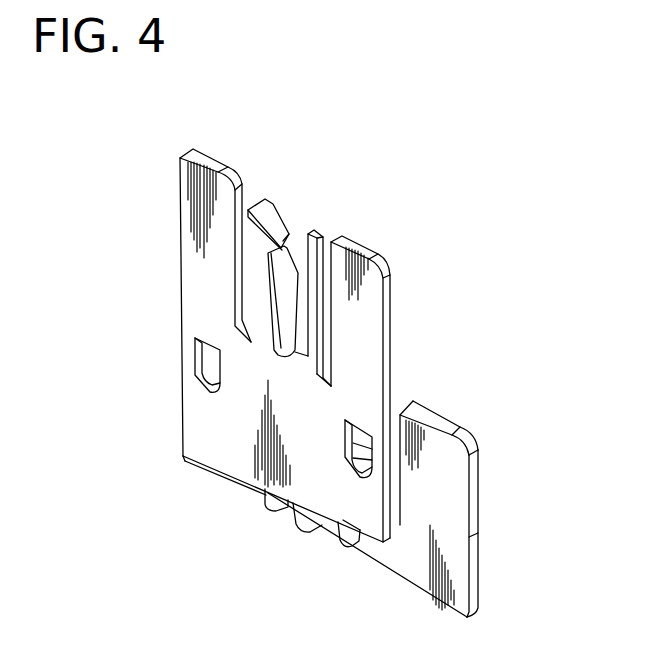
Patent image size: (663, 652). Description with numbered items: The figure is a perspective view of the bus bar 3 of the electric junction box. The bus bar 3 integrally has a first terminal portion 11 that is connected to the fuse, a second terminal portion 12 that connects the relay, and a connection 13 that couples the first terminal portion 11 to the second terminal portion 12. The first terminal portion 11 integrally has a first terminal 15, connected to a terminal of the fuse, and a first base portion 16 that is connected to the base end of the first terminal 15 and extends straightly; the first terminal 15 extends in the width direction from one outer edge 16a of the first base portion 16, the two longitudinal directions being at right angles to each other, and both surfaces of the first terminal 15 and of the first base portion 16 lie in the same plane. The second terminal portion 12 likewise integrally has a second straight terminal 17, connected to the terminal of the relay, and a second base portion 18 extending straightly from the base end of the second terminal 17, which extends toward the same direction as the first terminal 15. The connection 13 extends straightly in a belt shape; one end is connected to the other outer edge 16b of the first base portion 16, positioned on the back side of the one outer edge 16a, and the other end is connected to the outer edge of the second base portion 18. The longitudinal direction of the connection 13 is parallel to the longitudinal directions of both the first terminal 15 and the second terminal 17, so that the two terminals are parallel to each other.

The bus bar 3 is at (257, 136).
The first terminal portion 11 is at (396, 346).
The second terminal portion 12 is at (481, 515).
The connection 13 is at (280, 500).
The first terminal 15 is at (315, 230).
The first base portion 16 is at (313, 486).
The one outer edge of the first base portion 16a is at (319, 373).
The other outer edge of the first base portion 16b is at (338, 535).
The second terminal 17 is at (445, 461).
The second base portion 18 is at (427, 567).